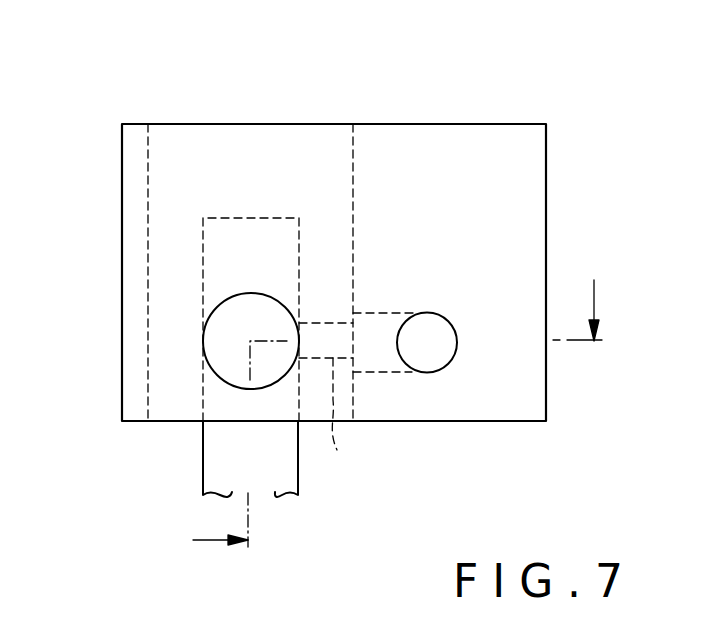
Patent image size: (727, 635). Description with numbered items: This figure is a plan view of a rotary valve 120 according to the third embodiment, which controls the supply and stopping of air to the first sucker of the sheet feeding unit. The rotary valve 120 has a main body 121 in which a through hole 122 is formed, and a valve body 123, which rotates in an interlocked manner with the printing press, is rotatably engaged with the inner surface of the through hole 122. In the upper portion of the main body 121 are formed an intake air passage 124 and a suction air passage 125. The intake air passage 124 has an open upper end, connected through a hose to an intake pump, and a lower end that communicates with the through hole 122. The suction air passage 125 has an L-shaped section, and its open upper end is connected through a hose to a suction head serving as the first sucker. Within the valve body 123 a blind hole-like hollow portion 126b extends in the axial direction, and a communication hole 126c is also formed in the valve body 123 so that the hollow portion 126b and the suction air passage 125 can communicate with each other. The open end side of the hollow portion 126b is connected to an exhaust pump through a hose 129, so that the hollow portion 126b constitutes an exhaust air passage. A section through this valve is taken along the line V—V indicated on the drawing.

The rotary valve 120 is at (439, 107).
The main body 121 is at (546, 165).
The through hole 122 is at (148, 180).
The valve body 123 is at (353, 170).
The intake air passage 124 is at (226, 377).
The suction air passage 125 is at (447, 366).
The hollow portion 126b is at (205, 250).
The communication hole 126c is at (351, 421).
The hose 129 is at (298, 470).